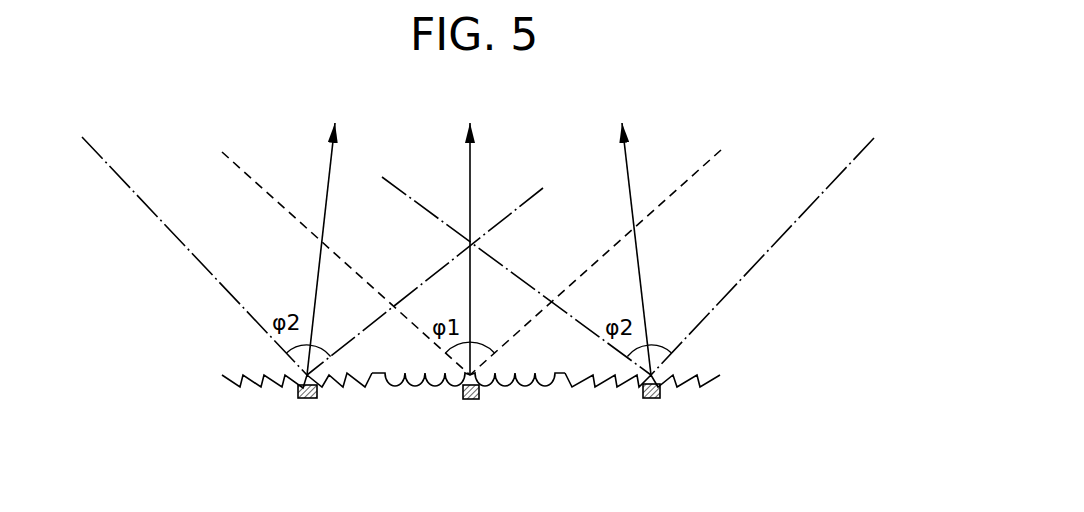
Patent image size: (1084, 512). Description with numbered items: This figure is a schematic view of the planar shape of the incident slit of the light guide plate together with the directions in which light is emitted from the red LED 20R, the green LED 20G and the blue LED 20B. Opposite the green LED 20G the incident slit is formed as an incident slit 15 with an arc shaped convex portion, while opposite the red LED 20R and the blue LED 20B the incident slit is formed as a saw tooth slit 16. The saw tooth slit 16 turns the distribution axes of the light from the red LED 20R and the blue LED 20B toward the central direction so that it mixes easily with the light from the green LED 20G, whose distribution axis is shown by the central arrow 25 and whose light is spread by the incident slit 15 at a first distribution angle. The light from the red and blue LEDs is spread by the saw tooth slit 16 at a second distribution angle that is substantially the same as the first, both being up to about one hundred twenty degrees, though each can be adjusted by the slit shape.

The emitted light / optical axis of light source 25 is at (327, 182).
The red LED 20R is at (304, 410).
The green LED 20G is at (467, 410).
The blue LED 20B is at (651, 409).
The incident slit with an arc shaped convex portion 15 is at (512, 385).
The saw tooth slit 16 is at (338, 387).